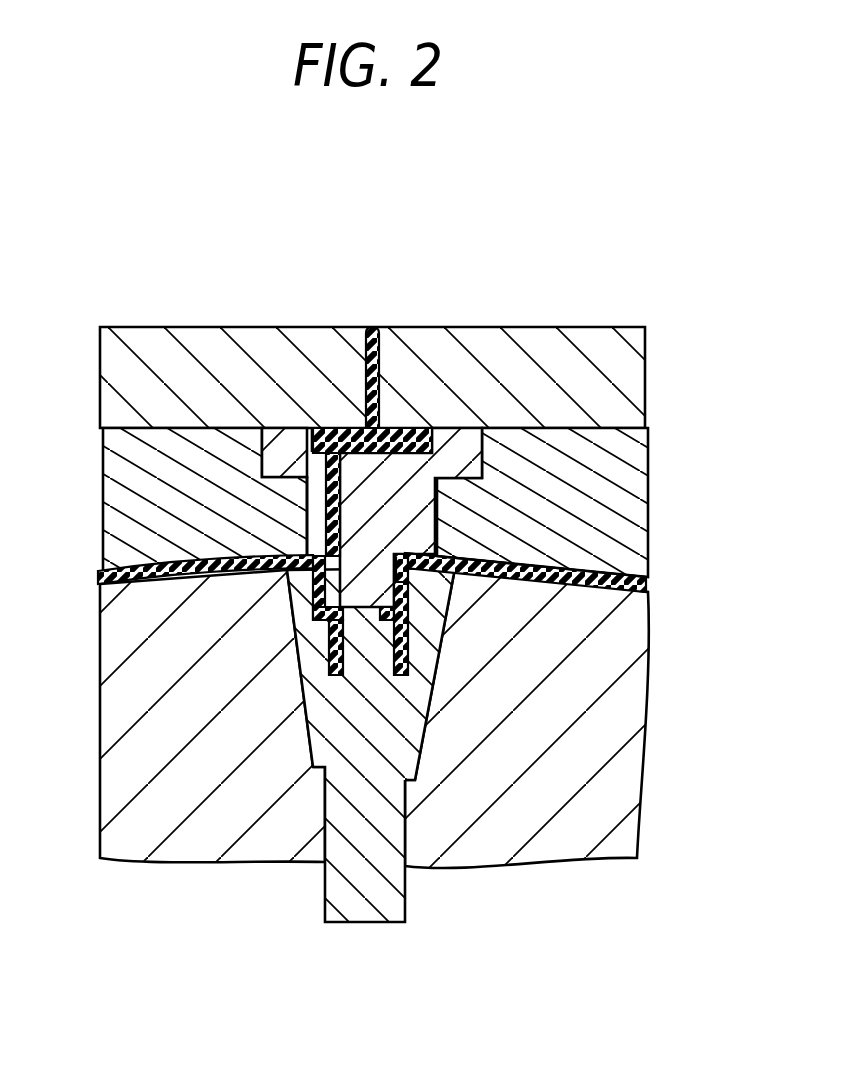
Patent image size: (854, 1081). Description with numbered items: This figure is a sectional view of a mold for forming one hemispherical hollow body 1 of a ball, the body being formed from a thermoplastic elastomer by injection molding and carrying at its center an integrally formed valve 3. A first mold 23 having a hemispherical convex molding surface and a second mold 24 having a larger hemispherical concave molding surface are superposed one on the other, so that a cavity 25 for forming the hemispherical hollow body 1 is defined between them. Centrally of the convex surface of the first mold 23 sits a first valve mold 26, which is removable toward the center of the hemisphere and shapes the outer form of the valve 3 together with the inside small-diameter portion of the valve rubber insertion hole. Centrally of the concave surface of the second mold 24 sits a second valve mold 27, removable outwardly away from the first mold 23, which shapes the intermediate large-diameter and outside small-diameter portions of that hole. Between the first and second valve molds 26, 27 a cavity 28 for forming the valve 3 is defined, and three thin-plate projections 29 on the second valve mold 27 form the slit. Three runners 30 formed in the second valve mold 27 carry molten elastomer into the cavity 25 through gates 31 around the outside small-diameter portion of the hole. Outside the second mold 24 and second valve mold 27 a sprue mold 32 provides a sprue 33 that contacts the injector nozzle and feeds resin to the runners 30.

The hemispherical hollow body 1 is at (130, 586).
The valve 3 is at (323, 659).
The first mold 23 is at (623, 768).
The second mold 24 is at (635, 460).
The cavity 25 is at (620, 573).
The first valve mold 26 is at (390, 902).
The second valve mold 27 is at (470, 437).
The cavity for forming the valve 28 is at (410, 625).
The thin-plate projections 29 is at (423, 580).
The runners 30 is at (333, 505).
The gates 31 is at (333, 545).
The sprue mold 32 is at (188, 335).
The sprue 33 is at (360, 340).